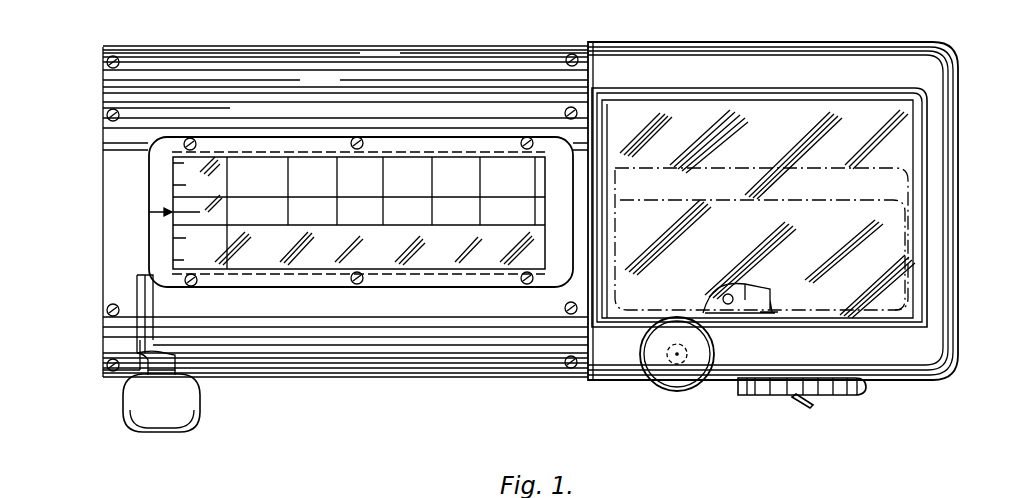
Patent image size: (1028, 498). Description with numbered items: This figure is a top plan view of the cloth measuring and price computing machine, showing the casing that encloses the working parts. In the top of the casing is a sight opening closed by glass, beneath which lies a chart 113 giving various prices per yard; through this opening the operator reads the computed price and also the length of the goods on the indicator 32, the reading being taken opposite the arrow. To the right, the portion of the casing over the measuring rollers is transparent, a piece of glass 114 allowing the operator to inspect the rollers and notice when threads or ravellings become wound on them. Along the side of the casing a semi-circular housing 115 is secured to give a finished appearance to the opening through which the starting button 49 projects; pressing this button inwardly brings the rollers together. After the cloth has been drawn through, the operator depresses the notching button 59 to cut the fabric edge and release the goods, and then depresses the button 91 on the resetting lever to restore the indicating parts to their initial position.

The indicator 32 is at (187, 202).
The starting button 49 is at (802, 403).
The notching button 59 is at (678, 391).
The button 91 is at (197, 420).
The chart 113 is at (448, 165).
The piece of glass 114 is at (873, 250).
The semi-circular housing 115 is at (863, 393).